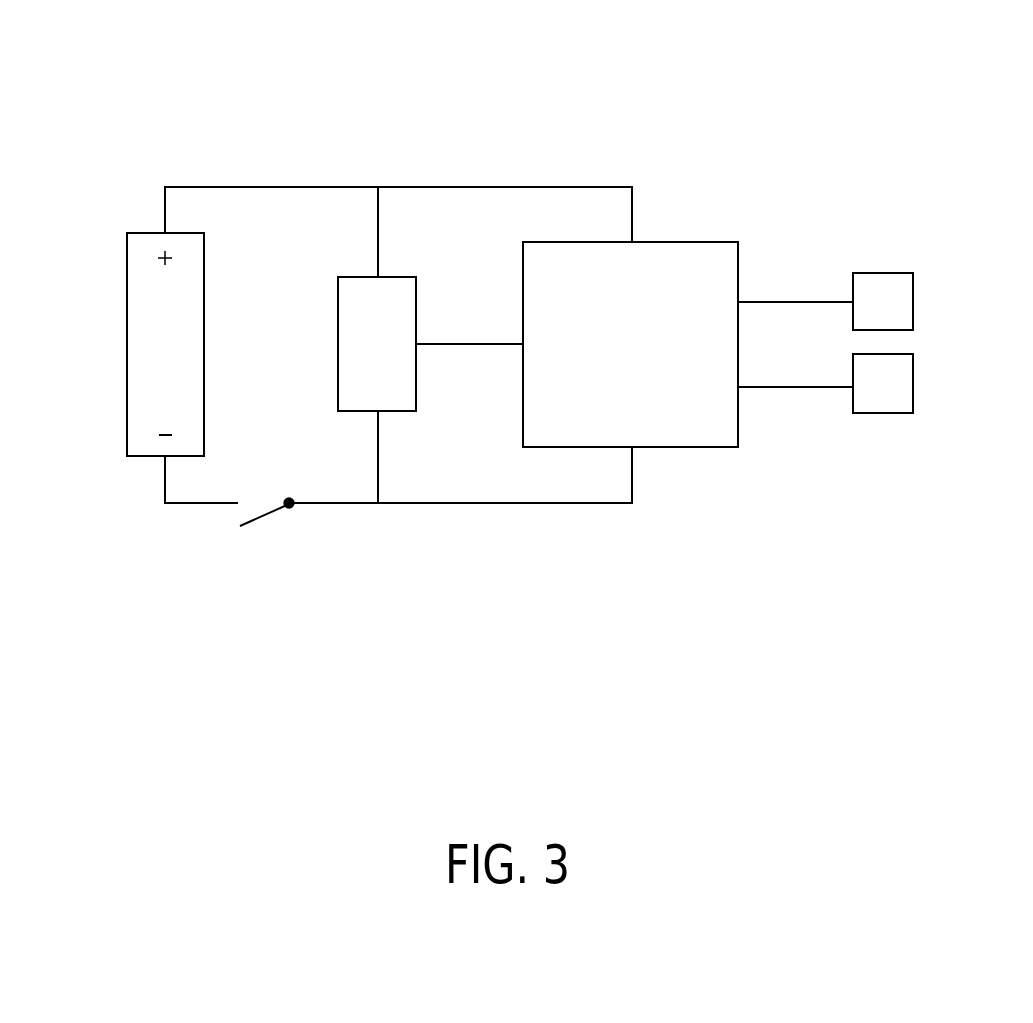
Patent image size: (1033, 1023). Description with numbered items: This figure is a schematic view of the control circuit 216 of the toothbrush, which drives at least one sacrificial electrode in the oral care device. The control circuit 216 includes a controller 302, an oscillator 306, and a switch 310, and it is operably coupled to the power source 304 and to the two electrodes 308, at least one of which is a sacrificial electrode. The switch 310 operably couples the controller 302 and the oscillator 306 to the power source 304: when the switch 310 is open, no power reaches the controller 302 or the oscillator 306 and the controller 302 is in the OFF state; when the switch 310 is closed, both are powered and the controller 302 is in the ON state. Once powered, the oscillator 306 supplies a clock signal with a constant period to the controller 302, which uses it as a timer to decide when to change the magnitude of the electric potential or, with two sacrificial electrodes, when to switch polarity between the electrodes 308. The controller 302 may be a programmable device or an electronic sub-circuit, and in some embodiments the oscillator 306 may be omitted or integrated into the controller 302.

The control circuit 216 is at (395, 122).
The controller 302 is at (654, 242).
The power source 304 is at (127, 233).
The oscillator 306 is at (401, 277).
The electrodes 308 is at (889, 273).
The switch 310 is at (303, 505).